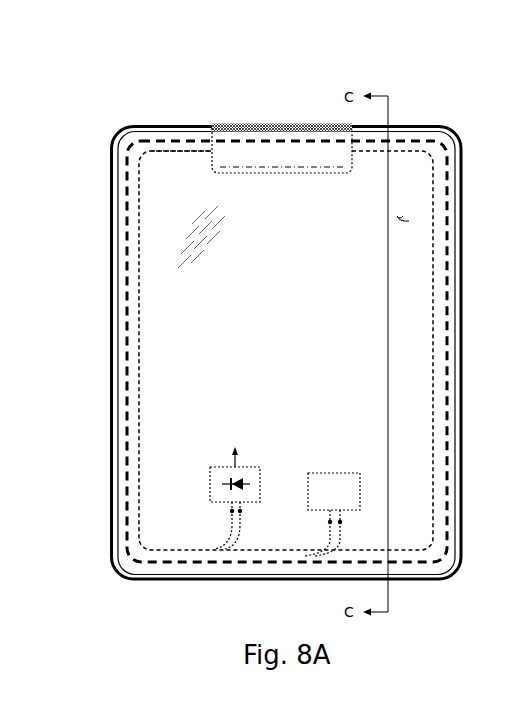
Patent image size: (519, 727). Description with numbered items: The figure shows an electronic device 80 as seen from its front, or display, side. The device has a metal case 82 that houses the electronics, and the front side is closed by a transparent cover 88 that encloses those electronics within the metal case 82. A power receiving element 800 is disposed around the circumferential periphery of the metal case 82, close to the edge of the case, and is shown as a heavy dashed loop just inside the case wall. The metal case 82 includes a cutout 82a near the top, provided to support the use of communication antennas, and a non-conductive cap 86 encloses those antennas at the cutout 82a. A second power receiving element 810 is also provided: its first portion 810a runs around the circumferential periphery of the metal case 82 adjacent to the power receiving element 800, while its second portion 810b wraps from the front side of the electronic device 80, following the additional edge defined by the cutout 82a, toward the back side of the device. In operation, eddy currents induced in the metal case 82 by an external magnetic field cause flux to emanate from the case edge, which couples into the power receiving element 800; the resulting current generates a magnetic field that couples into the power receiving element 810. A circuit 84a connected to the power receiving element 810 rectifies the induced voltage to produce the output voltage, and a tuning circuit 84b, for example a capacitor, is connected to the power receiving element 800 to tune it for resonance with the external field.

The electronic device 80 is at (261, 319).
The metal case 82 is at (110, 527).
The cutout 82a is at (278, 175).
The circuit 84a is at (210, 482).
The tuning circuit 84b is at (333, 473).
The non-conductive cap 86 is at (280, 124).
The transparent cover 88 is at (403, 216).
The power receiving element 800 is at (127, 408).
The power receiving element 810 is at (139, 470).
The first portion 810a is at (185, 152).
The second portion 810b is at (267, 166).